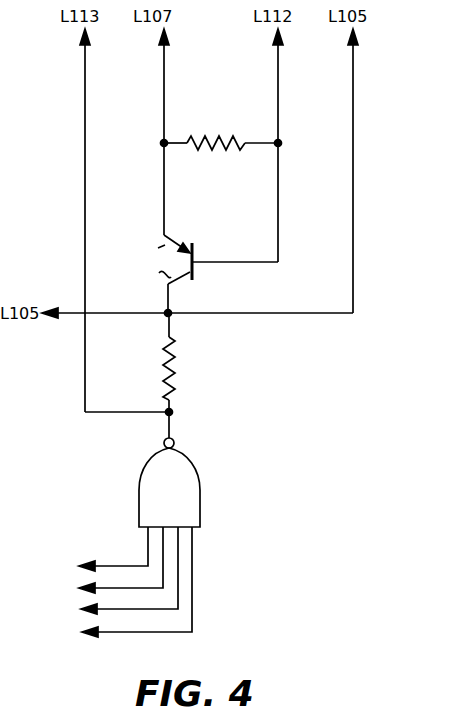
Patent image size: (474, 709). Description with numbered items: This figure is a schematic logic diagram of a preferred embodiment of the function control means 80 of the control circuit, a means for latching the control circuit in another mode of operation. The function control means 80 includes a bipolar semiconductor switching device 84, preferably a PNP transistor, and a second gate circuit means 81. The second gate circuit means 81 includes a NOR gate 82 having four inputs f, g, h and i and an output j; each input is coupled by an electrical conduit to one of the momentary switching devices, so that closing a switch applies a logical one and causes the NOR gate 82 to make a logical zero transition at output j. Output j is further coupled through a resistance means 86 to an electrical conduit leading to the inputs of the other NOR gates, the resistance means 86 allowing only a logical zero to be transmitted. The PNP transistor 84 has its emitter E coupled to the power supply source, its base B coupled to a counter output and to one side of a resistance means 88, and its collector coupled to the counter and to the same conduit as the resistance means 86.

The function control means 80 is at (118, 146).
The second gate circuit means 81 is at (246, 414).
The NOR gate 82 is at (197, 500).
The bipolar semiconductor switching device 84 is at (195, 268).
The resistance means 86 is at (177, 370).
The resistance means 88 is at (216, 135).